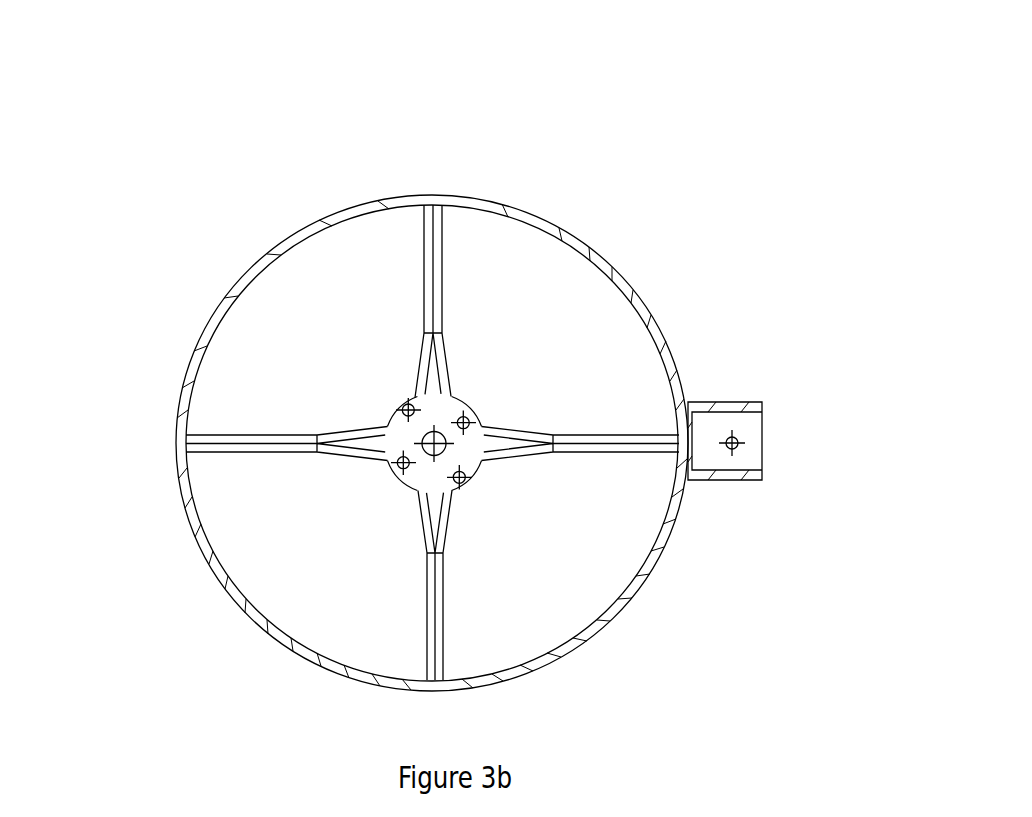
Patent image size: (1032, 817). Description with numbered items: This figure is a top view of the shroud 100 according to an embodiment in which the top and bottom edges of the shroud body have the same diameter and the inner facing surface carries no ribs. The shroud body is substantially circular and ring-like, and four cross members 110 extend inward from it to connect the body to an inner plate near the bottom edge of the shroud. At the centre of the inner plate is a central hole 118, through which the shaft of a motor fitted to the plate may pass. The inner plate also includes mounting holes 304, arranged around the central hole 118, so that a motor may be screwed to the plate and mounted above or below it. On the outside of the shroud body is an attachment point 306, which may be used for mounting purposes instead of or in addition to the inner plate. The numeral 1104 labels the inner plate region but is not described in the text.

The shroud 100 is at (698, 232).
The cross members 110 is at (432, 278).
The central hole 118 is at (434, 430).
The mounting holes 304 is at (408, 404).
The attachment point 306 is at (745, 453).
The hub plate 1104 is at (486, 457).